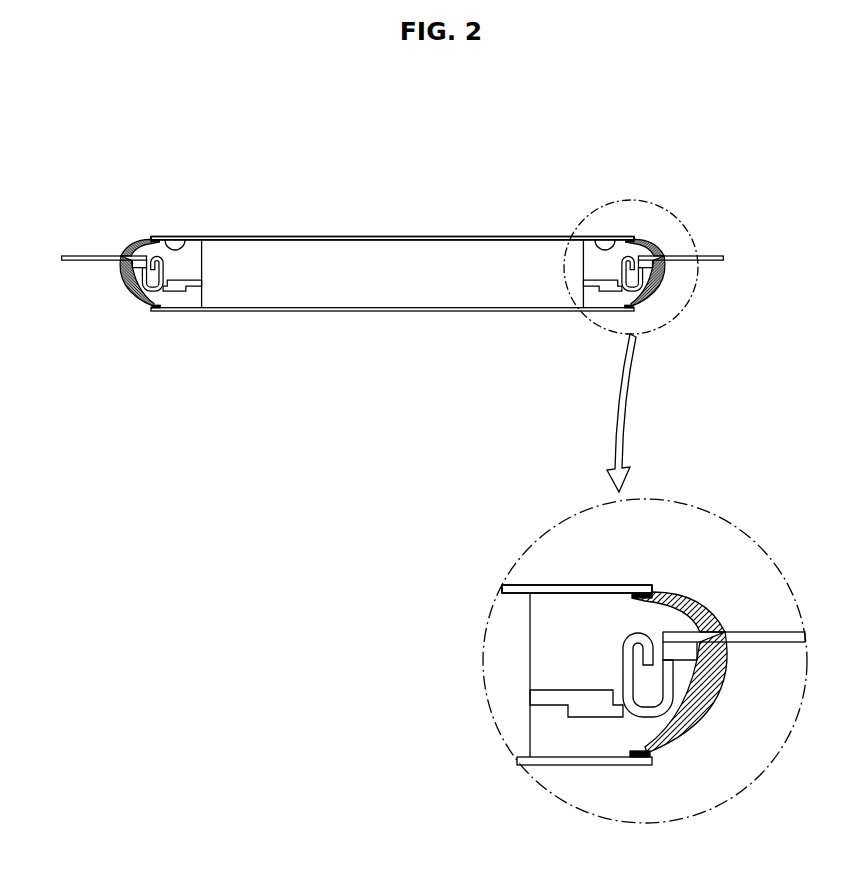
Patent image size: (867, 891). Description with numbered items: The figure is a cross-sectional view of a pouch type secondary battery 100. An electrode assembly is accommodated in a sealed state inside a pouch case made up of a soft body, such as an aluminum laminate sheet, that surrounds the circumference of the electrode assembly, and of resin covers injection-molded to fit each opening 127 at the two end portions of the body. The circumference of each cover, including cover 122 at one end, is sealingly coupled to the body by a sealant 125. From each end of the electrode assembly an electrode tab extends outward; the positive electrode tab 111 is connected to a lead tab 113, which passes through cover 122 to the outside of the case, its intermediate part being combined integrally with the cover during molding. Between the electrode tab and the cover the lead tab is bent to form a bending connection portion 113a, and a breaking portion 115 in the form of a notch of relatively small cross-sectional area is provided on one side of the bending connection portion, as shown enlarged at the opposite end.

The pouch type secondary battery 100 is at (439, 172).
The positive electrode tab 111 is at (196, 292).
The lead tab 113 is at (85, 257).
The bending connection portion 113a is at (134, 288).
The breaking portion 115 is at (668, 660).
The cover 122 is at (138, 241).
The sealant 125 is at (658, 592).
The opening 127 is at (178, 247).